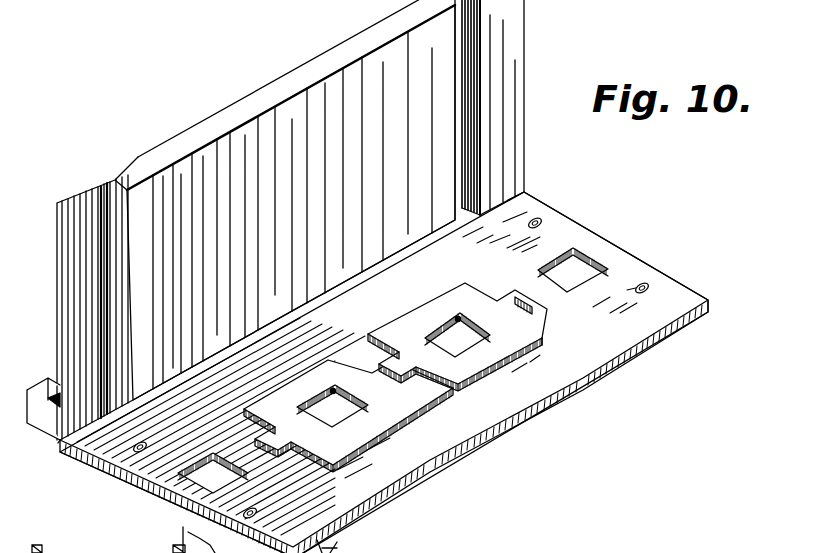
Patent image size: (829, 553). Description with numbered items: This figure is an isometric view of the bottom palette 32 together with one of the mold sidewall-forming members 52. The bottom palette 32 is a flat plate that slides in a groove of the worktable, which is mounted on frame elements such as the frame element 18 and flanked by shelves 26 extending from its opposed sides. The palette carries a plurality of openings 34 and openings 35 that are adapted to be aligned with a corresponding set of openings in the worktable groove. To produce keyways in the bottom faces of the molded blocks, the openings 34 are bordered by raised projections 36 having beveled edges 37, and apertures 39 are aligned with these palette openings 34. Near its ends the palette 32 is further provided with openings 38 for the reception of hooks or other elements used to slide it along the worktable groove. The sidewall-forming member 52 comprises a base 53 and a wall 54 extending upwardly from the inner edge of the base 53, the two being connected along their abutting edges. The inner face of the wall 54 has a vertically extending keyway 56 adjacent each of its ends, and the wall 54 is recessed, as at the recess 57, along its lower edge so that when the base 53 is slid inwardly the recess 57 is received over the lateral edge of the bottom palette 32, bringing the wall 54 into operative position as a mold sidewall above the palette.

The frame element 18 is at (123, 540).
The shelf 26 is at (338, 547).
The bottom palette 32 is at (622, 262).
The opening 34 is at (335, 385).
The opening 35 is at (215, 474).
The projection 36 is at (505, 337).
The beveled edge 37 is at (533, 308).
The opening 38 is at (542, 221).
The aperture 39 is at (325, 388).
The mold sidewall-forming member 52 is at (266, 84).
The base 53 is at (52, 383).
The wall 54 is at (330, 60).
The keyway 56 is at (138, 170).
The recess 57 is at (60, 443).